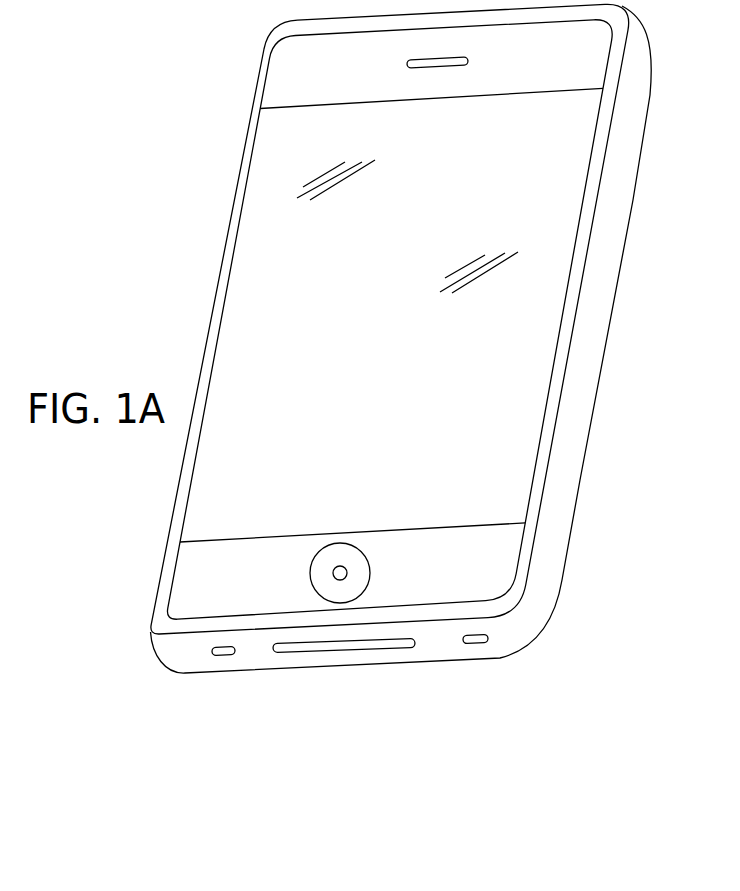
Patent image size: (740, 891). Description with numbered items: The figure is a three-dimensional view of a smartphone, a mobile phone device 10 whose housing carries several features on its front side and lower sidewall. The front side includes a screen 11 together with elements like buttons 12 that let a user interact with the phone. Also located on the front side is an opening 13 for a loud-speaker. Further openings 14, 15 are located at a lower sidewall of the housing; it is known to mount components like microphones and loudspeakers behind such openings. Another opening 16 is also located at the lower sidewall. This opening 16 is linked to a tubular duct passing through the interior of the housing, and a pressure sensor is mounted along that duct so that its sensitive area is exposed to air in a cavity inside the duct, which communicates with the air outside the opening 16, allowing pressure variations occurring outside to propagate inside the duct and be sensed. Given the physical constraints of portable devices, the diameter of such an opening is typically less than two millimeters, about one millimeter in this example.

The portable electronic device 10 is at (637, 317).
The screen 11 is at (381, 410).
The buttons 12 is at (320, 568).
The opening for a loud-speaker 13 is at (407, 66).
The opening 14 is at (212, 655).
The opening 15 is at (407, 648).
The opening 16 is at (467, 644).